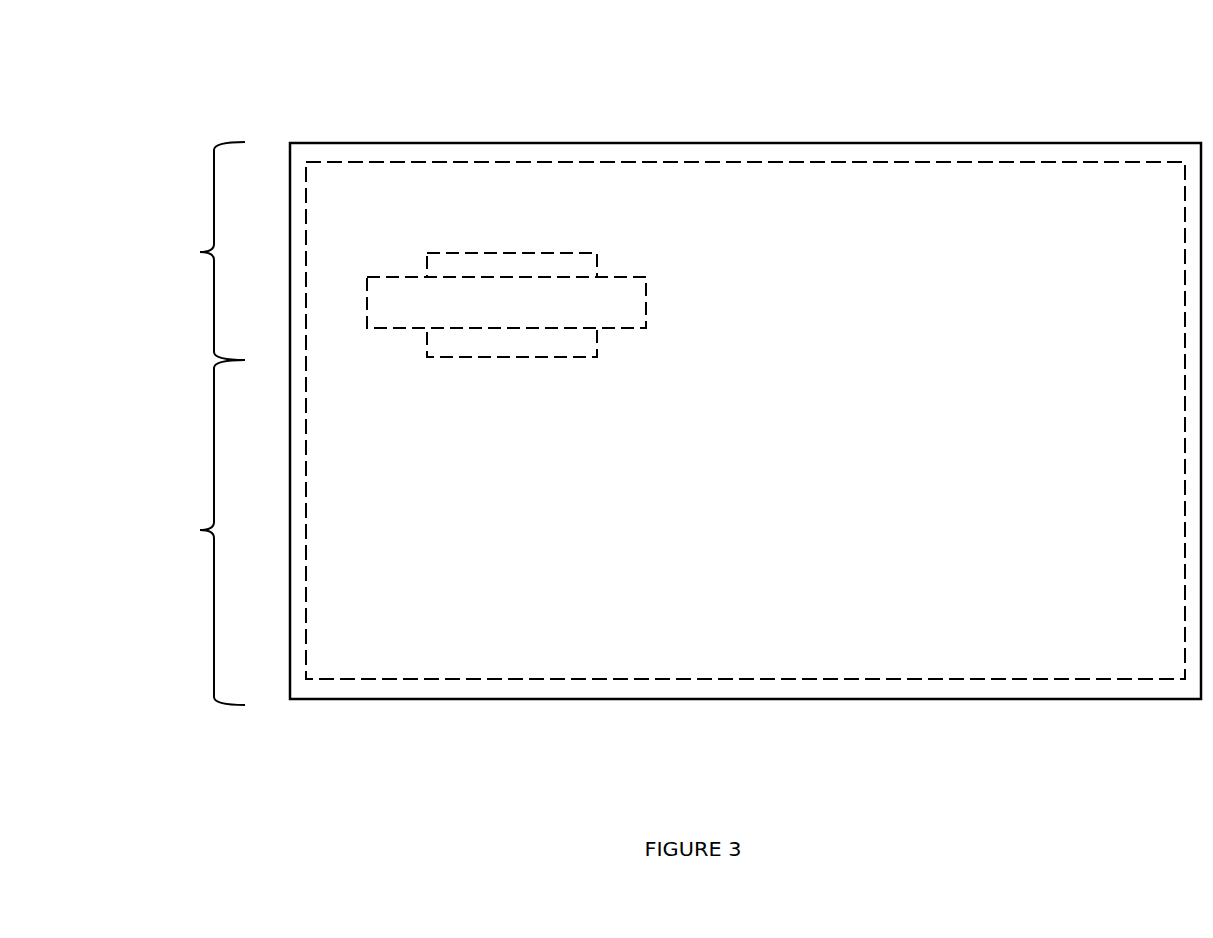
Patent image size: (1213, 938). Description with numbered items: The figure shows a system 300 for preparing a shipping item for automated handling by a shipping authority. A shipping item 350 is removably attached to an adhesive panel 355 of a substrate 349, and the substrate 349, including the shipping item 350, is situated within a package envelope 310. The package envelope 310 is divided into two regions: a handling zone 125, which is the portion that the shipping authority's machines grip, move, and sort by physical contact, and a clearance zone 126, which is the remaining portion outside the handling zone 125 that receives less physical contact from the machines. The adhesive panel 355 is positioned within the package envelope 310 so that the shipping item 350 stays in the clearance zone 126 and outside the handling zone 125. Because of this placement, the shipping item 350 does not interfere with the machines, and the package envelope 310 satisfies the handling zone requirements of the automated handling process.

The system 300 is at (859, 83).
The package envelope 310 is at (818, 709).
The substrate 349 is at (788, 590).
The shipping item 350 is at (592, 314).
The adhesive panel 355 is at (591, 366).
The clearance zone 126 is at (141, 251).
The handling zone 125 is at (144, 532).